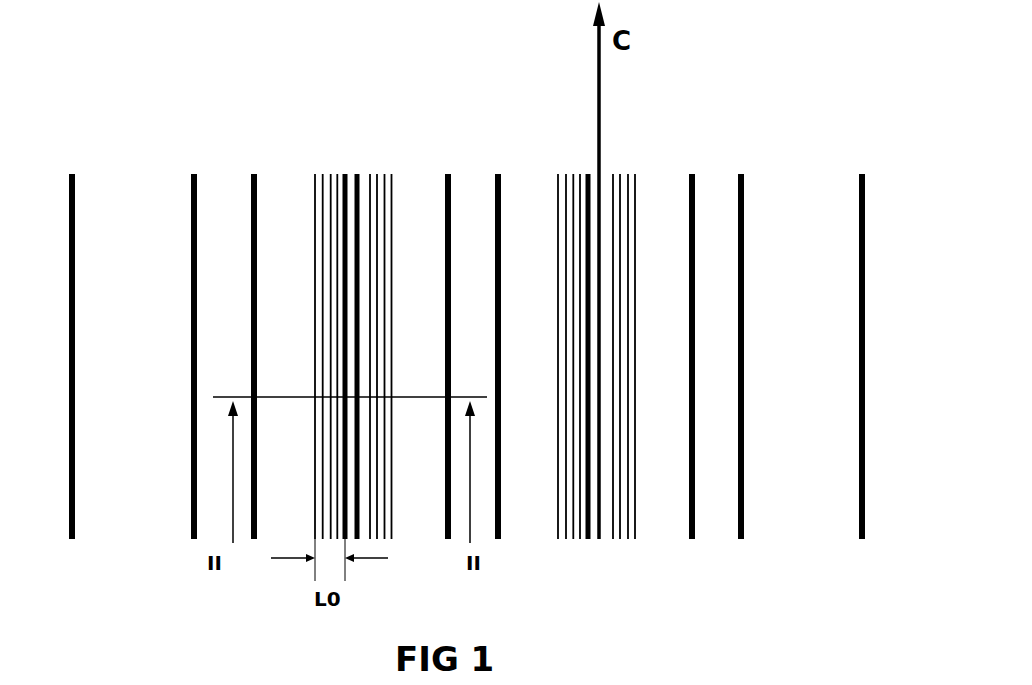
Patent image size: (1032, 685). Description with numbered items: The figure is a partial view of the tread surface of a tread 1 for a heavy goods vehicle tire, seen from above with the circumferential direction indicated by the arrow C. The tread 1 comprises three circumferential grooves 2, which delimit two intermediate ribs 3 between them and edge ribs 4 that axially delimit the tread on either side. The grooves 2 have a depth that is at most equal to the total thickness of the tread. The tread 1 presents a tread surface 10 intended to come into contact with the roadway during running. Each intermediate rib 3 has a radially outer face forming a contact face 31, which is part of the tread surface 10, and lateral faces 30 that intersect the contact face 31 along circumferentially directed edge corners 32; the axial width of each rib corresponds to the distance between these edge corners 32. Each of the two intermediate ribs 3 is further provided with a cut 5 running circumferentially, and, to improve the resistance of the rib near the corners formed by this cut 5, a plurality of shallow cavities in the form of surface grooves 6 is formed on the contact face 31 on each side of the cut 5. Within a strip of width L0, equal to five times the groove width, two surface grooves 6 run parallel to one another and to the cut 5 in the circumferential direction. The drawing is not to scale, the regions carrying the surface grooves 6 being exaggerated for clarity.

The tread 1 is at (167, 263).
The circumferential grooves 2 is at (212, 250).
The intermediate ribs 3 is at (272, 203).
The edge ribs 4 is at (107, 262).
The cut 5 is at (351, 527).
The surface grooves 6 is at (377, 527).
The tread surface 10 is at (818, 468).
The lateral faces 30 is at (450, 265).
The contact face 31 is at (428, 200).
The edge corners 32 is at (257, 267).